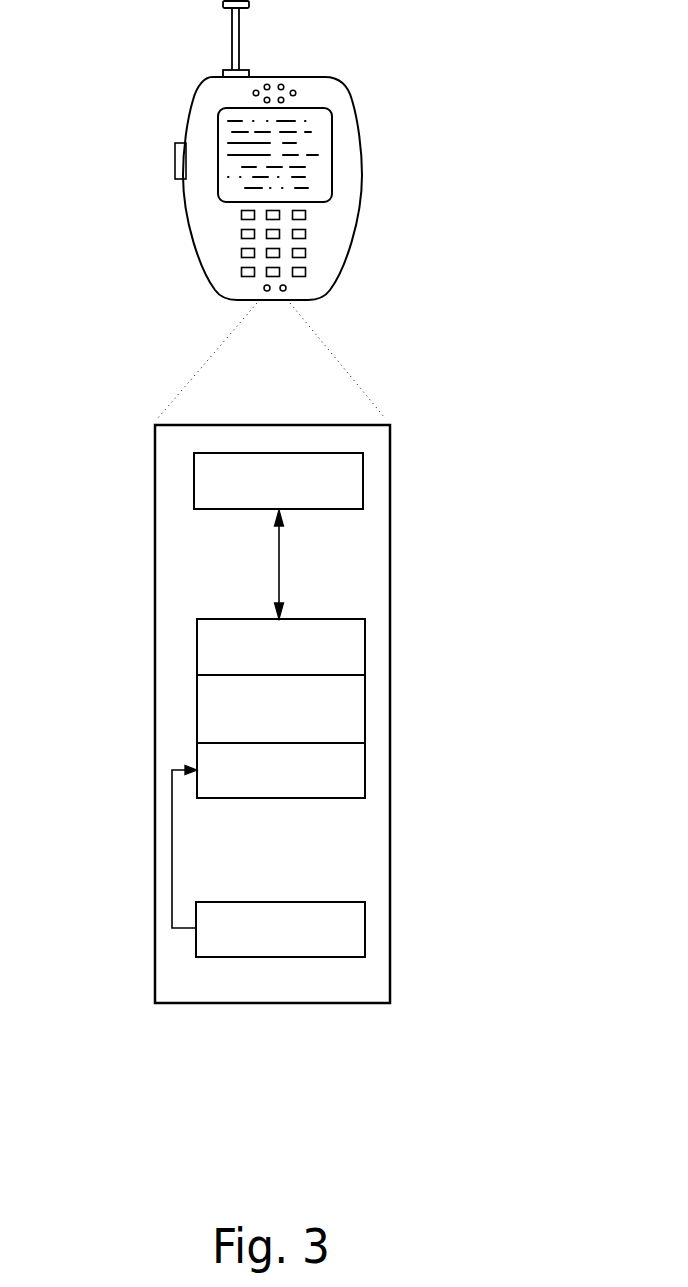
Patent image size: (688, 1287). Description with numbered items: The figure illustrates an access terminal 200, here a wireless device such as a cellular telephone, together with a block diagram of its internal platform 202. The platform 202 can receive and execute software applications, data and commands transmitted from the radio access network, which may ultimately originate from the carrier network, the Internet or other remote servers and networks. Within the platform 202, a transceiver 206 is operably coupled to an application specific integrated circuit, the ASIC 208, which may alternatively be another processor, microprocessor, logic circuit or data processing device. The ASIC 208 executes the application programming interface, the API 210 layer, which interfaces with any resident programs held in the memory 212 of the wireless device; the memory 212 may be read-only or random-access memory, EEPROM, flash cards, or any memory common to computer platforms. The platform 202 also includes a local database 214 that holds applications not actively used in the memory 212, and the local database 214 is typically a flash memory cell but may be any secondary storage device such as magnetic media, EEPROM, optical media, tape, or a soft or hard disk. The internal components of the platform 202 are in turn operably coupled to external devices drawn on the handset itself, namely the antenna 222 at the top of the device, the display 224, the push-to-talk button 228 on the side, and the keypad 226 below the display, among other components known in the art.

The access terminal 200 is at (338, 277).
The platform 202 is at (155, 620).
The transceiver 206 is at (363, 482).
The application specific integrated circuit 208 is at (365, 655).
The application programming interface 210 is at (365, 702).
The memory 212 is at (365, 770).
The local database 214 is at (365, 911).
The antenna 222 is at (249, 13).
The display 224 is at (332, 143).
The keypad 226 is at (305, 235).
The push-to-talk button 228 is at (175, 152).